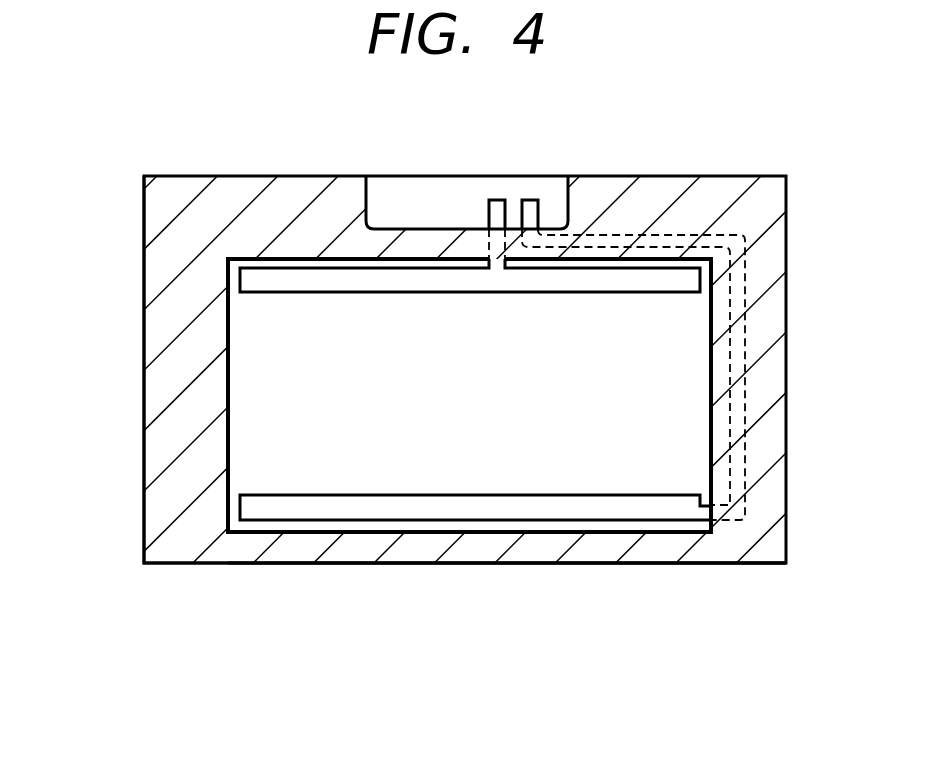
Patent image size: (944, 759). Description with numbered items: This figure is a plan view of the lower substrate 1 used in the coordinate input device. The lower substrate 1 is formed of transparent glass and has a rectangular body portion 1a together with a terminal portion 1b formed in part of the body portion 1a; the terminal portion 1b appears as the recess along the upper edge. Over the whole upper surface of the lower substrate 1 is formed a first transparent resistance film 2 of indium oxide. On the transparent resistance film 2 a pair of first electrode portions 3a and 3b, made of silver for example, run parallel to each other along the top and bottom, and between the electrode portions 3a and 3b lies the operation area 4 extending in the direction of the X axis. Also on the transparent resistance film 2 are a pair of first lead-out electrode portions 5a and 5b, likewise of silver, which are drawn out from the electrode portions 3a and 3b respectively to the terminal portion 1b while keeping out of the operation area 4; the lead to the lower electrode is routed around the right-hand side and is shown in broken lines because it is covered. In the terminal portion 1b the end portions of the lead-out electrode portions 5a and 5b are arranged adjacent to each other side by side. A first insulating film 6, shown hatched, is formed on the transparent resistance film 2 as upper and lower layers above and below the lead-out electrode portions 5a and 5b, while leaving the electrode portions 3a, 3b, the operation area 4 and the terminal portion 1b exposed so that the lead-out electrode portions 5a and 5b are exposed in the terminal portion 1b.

The lower substrate 1 is at (134, 521).
The body portion 1a is at (152, 412).
The terminal portion 1b is at (385, 200).
The first transparent resistance film 2 is at (650, 527).
The first electrode portion 3a is at (687, 279).
The first electrode portion 3b is at (690, 494).
The operation area 4 is at (498, 458).
The first lead-out electrode portion 5a is at (498, 208).
The first lead-out electrode portion 5b is at (530, 208).
The first insulating film 6 is at (762, 548).